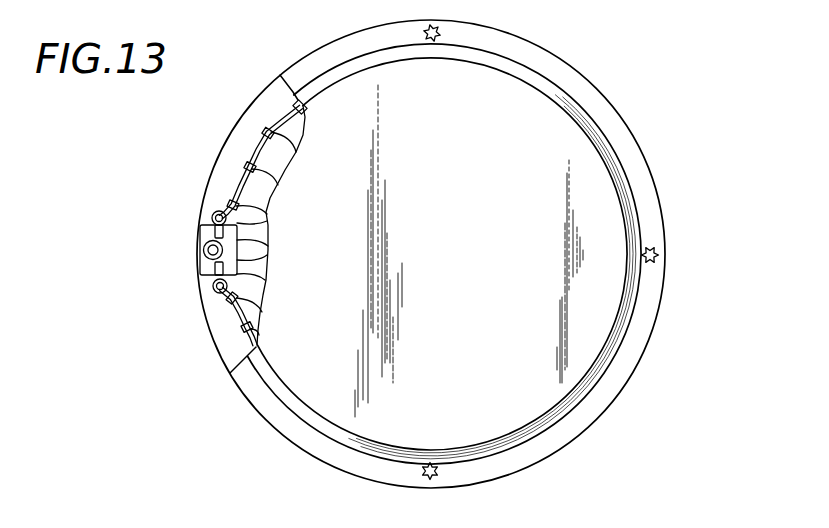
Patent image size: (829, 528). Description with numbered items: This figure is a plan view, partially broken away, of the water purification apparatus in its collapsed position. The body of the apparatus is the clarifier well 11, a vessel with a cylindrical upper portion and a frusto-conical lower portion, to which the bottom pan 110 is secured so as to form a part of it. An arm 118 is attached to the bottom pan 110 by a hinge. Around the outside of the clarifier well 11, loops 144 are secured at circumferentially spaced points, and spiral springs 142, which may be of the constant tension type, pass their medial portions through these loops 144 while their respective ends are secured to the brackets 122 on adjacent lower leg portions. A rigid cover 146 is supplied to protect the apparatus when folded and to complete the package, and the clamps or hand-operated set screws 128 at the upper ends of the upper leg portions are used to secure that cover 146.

The bottom pan 110 is at (228, 162).
The clarifier well 11 is at (265, 173).
The bracket 122 is at (211, 222).
The arm 118 is at (202, 243).
The loop 144 is at (235, 297).
The spiral spring 142 is at (247, 313).
The rigid cover 146 is at (625, 155).
The clamp or hand-operated set screw 128 is at (654, 258).